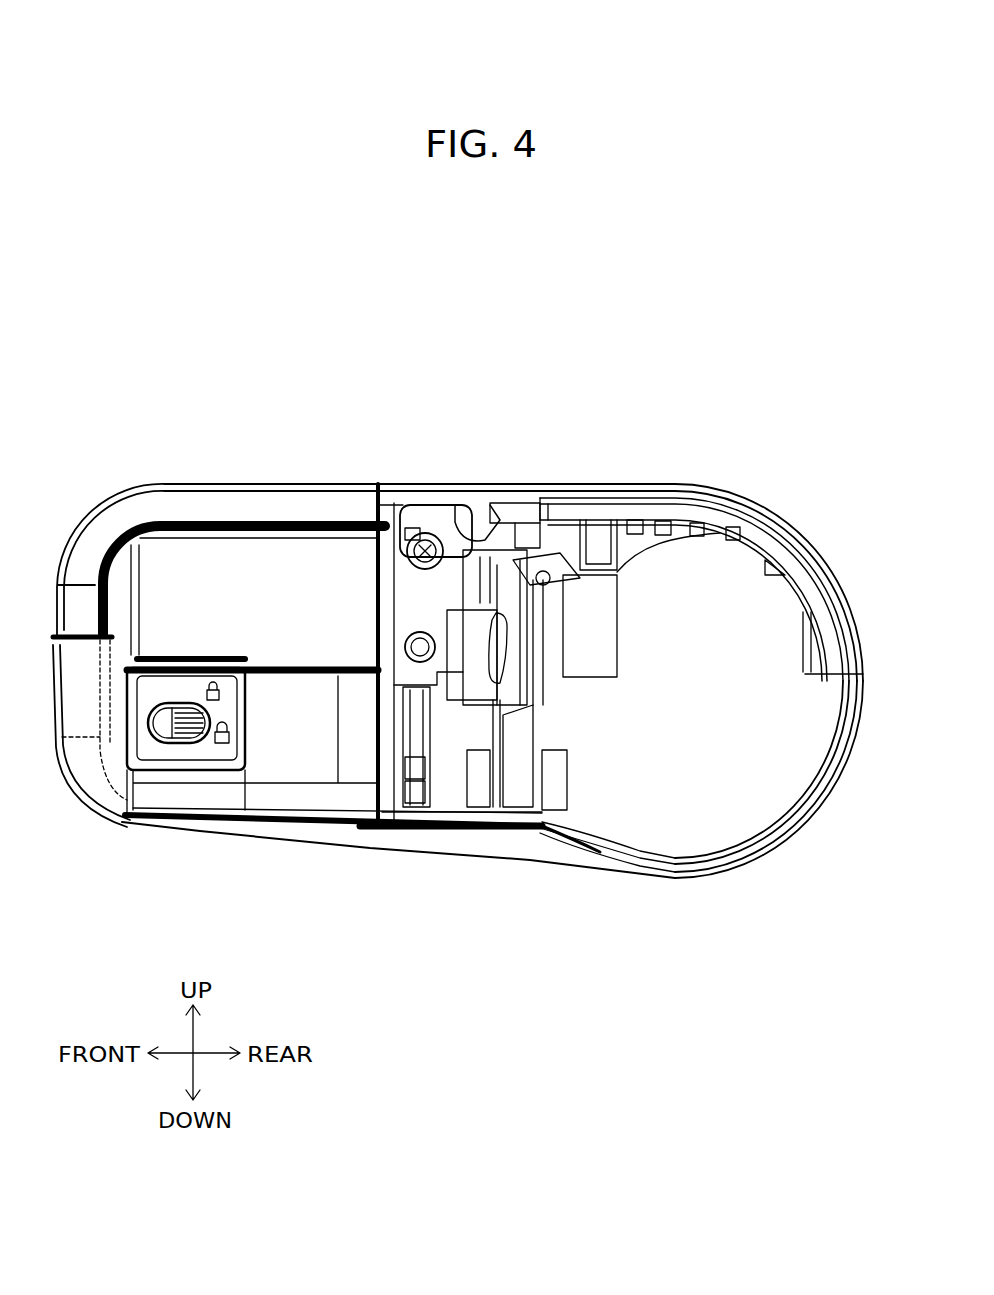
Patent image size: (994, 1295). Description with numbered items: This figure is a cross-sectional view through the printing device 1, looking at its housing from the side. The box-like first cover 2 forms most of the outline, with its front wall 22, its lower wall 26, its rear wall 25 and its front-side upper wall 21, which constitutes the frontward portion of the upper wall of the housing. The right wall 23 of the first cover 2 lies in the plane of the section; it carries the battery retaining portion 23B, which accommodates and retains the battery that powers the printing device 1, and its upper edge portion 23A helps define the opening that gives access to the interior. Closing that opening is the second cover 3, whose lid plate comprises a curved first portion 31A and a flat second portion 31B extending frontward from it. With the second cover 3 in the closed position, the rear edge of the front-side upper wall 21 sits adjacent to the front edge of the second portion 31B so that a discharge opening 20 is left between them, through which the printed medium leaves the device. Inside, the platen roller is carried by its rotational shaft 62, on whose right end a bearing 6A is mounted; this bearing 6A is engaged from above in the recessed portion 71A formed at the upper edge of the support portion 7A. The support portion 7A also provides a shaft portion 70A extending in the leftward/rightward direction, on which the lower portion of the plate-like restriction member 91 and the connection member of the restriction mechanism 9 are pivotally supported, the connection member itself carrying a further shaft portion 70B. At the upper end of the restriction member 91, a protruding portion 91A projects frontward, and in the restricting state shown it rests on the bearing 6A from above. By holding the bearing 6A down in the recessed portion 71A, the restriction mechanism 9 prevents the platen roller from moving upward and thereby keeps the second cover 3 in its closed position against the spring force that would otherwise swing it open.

The printing device 1 is at (788, 453).
The first cover 2 is at (118, 486).
The second cover 3 is at (632, 486).
The bearing 6A is at (398, 530).
The support portion 7A is at (430, 602).
The restriction mechanism 9 is at (460, 515).
The discharge opening 20 is at (398, 484).
The front-side upper wall 21 is at (255, 484).
The front wall 22 is at (45, 695).
The right wall 23 is at (693, 718).
The upper edge portion 23A is at (693, 537).
The battery retaining portion 23B is at (253, 717).
The rear wall 25 is at (860, 733).
The lower wall 26 is at (500, 863).
The first portion 31A is at (800, 522).
The second portion 31B is at (590, 484).
The rotational shaft 62 is at (382, 500).
The shaft portion 70A is at (430, 655).
The shaft portion 70B is at (503, 625).
The recessed portion 71A is at (420, 556).
The restriction member 91 is at (477, 517).
The protruding portion 91A is at (420, 535).